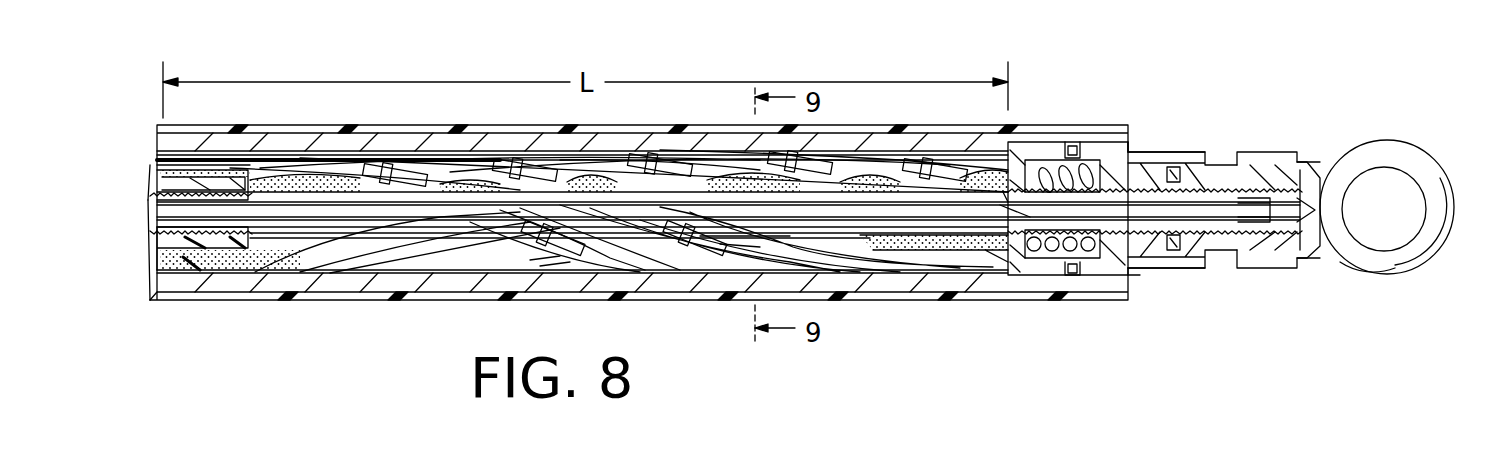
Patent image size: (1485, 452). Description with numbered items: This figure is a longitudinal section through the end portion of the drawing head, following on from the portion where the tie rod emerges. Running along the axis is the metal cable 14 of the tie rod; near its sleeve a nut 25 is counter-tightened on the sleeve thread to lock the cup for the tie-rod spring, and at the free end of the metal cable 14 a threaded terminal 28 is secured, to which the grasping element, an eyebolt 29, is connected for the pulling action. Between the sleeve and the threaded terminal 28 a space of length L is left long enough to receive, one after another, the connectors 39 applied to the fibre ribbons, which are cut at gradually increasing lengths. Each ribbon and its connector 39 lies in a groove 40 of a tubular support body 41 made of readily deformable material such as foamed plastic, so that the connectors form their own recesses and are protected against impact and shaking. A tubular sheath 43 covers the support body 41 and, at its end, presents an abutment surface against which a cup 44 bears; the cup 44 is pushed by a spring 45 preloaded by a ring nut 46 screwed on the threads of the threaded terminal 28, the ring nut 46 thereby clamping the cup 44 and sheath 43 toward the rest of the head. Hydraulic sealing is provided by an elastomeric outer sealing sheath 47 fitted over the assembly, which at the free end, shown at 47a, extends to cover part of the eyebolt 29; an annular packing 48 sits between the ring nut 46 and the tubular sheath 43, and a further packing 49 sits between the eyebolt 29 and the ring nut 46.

The metal cable 14 is at (158, 213).
The nut 25 is at (160, 240).
The threaded terminal 28 is at (1220, 232).
The eyebolt 29 is at (1418, 150).
The connector 39 is at (405, 165).
The groove 40 is at (950, 155).
The tubular support body 41 is at (985, 255).
The tubular sheath 43 is at (505, 292).
The cup 44 is at (1045, 165).
The spring 45 is at (1105, 160).
The ring nut 46 is at (1135, 250).
The outer sealing sheath 47 is at (278, 125).
The sealing sheath end portion 47a is at (1268, 269).
The annular packing 48 is at (1070, 276).
The packing 49 is at (1178, 164).